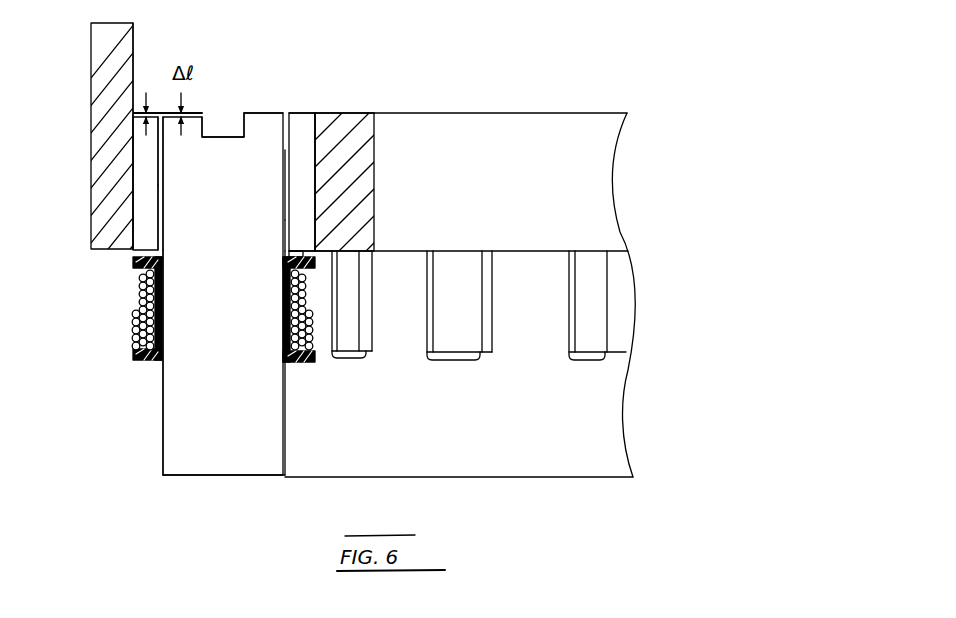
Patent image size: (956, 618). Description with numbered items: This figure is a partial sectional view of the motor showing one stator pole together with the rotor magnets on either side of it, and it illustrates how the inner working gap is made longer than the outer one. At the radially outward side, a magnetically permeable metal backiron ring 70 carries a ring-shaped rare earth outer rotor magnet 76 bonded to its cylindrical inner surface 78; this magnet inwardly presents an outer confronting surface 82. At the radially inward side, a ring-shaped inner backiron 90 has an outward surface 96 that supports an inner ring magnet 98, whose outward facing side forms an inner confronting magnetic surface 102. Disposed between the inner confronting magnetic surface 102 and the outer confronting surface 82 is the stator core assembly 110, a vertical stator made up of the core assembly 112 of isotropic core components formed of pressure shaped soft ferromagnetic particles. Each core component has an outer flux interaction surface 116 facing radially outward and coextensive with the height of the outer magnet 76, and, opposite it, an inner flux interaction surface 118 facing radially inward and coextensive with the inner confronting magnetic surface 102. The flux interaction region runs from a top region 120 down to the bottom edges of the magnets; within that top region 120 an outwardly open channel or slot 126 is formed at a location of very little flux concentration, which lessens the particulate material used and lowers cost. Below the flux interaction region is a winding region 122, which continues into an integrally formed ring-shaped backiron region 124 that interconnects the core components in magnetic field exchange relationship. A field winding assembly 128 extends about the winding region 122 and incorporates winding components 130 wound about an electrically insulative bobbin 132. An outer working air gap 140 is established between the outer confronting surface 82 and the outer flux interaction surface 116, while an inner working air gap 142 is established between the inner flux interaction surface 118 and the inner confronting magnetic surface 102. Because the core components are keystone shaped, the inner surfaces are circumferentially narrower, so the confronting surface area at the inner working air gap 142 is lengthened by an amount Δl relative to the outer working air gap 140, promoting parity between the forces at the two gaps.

The backiron ring 70 is at (108, 79).
The cylindrical inner surface 78 is at (133, 47).
The outer confronting surface 82 is at (162, 155).
The top region 120 is at (233, 98).
The outwardly open channel or slot 126 is at (224, 132).
The inner confronting magnetic surface 102 is at (285, 152).
The inner ring magnet 98 is at (306, 111).
The outward surface of inner backiron 96 is at (315, 135).
The inner backiron 90 is at (357, 183).
The outer flux interaction surface 116 is at (163, 170).
The inner flux interaction surface 118 is at (285, 197).
The outer working air gap 140 is at (162, 228).
The inner working air gap 142 is at (285, 240).
The outer rotor magnet 76 is at (145, 238).
The field winding assembly 128 is at (131, 314).
The winding region 122 is at (203, 325).
The stator core assembly 110 is at (162, 433).
The core assembly 112 is at (207, 457).
The ring-shaped backiron region 124 is at (258, 453).
The winding components 130 is at (315, 330).
The bobbin 132 is at (300, 360).